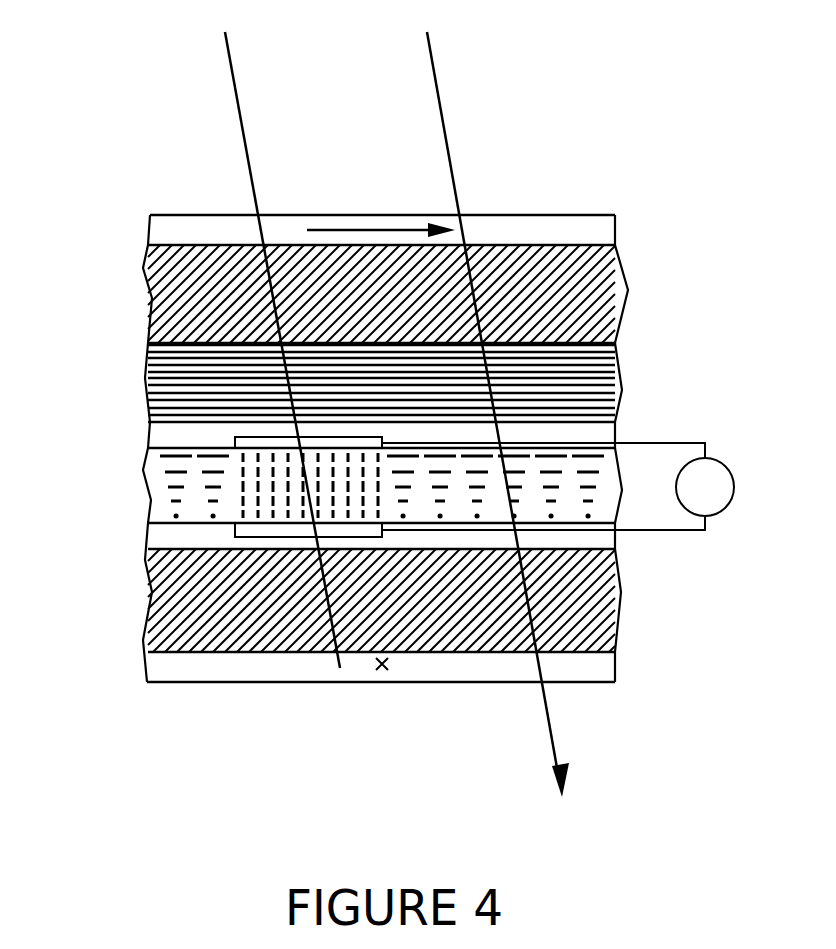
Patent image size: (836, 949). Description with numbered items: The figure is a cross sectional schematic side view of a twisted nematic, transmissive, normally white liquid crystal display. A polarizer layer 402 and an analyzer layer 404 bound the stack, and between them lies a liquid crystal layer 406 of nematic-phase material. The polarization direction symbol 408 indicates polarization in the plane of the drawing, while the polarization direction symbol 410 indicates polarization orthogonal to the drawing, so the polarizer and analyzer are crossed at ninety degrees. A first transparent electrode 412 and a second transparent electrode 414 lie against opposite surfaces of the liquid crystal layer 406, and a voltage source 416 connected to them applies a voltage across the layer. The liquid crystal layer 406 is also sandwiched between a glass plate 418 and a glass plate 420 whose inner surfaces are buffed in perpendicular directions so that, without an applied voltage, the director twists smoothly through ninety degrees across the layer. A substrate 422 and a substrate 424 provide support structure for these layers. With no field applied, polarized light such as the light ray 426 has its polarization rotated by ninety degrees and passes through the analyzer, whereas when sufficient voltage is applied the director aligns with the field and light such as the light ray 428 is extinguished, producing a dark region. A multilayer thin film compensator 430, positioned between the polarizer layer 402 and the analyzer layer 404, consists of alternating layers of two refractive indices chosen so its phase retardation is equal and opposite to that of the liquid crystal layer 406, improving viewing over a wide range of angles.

The polarizer layer 402 is at (612, 230).
The analyzer layer 404 is at (612, 663).
The liquid crystal layer 406 is at (145, 500).
The polarization direction symbol 408 is at (353, 230).
The polarization direction symbol 410 is at (381, 672).
The first transparent electrode 412 is at (235, 438).
The second transparent electrode 414 is at (235, 530).
The voltage source 416 is at (727, 469).
The glass plate 418 is at (603, 430).
The glass plate 420 is at (603, 542).
The substrate 422 is at (612, 293).
The substrate 424 is at (605, 603).
The light ray 426 is at (445, 117).
The light ray 428 is at (243, 120).
The multilayer thin film compensator 430 is at (143, 417).